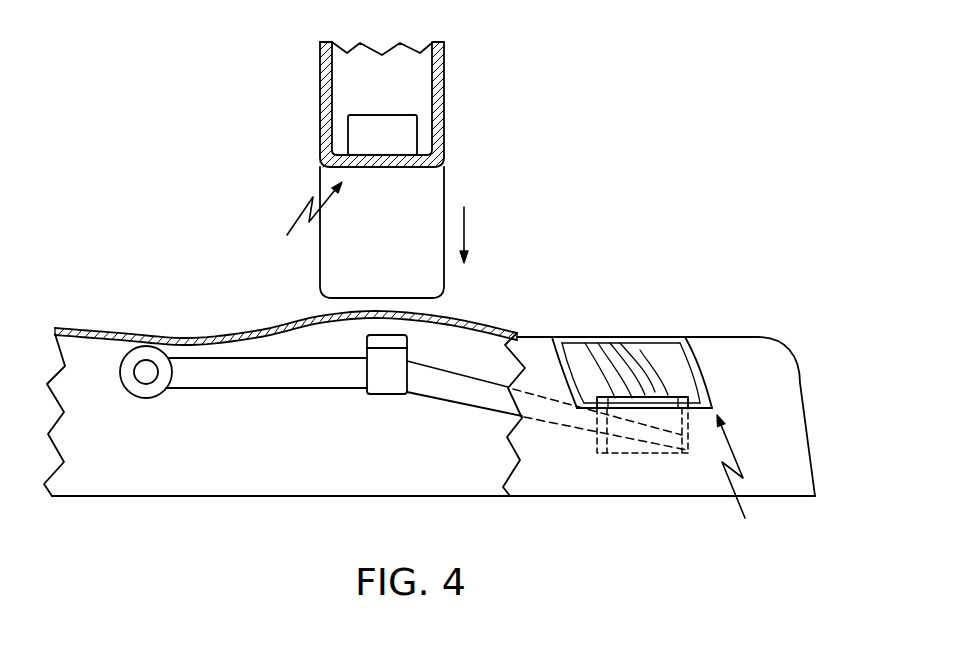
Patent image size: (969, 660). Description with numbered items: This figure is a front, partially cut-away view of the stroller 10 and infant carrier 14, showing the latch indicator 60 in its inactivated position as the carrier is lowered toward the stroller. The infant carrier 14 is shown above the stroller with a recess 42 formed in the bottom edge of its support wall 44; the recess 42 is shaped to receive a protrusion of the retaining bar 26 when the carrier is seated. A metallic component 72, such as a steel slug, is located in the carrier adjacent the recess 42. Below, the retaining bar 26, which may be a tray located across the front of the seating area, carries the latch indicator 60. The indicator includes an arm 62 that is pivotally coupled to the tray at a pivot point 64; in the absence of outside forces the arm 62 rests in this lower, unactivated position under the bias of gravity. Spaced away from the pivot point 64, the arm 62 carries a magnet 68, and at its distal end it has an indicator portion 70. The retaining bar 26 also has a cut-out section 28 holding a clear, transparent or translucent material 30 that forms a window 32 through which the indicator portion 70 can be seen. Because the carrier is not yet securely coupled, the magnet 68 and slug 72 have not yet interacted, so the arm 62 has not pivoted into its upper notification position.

The stroller 10 is at (802, 427).
The infant carrier 14 is at (444, 59).
The retaining bar 26 is at (93, 330).
The cut-out section 28 is at (673, 342).
The transparent material 30 is at (628, 332).
The window 32 is at (744, 484).
The recess 42 is at (299, 221).
The support wall 44 is at (433, 190).
The latch indicator 60 is at (703, 443).
The arm 62 is at (265, 388).
The pivot point 64 is at (144, 398).
The magnet 68 is at (390, 345).
The indicator portion 70 is at (672, 397).
The metallic component 72 is at (396, 148).